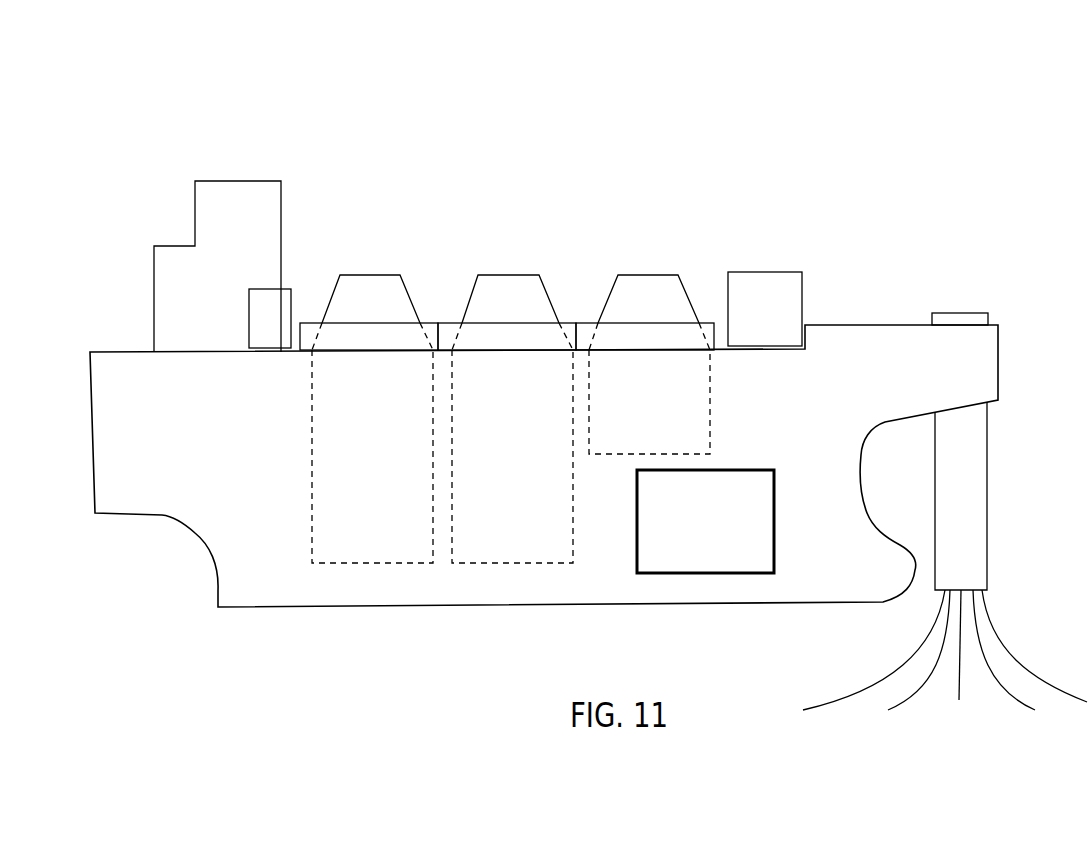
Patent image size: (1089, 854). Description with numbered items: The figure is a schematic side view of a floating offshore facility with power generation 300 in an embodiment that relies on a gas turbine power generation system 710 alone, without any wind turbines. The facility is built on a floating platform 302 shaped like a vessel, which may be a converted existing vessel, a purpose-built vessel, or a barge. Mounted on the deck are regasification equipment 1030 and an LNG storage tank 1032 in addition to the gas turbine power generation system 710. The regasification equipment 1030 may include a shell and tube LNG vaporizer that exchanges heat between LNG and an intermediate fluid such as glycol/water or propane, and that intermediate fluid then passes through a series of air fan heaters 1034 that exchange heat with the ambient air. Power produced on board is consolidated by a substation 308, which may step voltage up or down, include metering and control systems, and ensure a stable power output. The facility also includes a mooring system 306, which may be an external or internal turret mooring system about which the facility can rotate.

The floating offshore facility 300 is at (588, 364).
The floating platform 302 is at (878, 342).
The mooring system 306 is at (978, 468).
The substation 308 is at (705, 521).
The gas turbine power generation system 710 is at (751, 316).
The regasification equipment 1030 is at (265, 303).
The LNG storage tank 1032 is at (511, 456).
The air fan heater 1034 is at (337, 340).